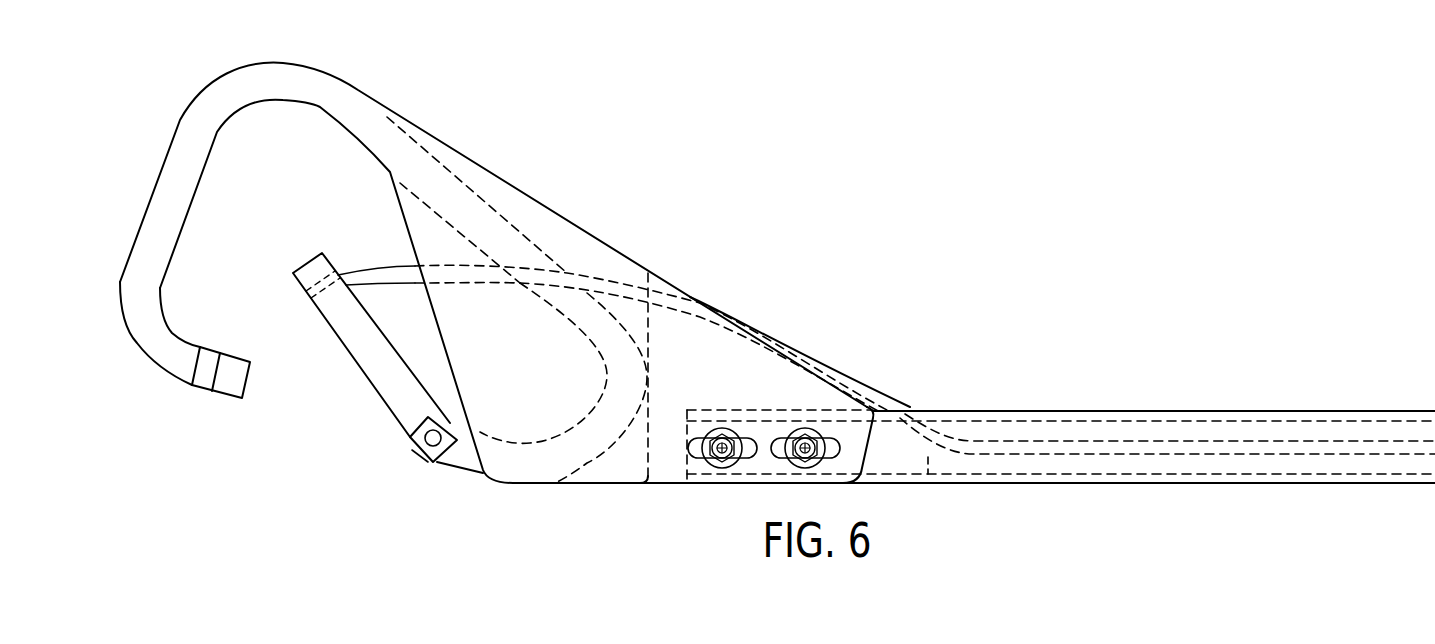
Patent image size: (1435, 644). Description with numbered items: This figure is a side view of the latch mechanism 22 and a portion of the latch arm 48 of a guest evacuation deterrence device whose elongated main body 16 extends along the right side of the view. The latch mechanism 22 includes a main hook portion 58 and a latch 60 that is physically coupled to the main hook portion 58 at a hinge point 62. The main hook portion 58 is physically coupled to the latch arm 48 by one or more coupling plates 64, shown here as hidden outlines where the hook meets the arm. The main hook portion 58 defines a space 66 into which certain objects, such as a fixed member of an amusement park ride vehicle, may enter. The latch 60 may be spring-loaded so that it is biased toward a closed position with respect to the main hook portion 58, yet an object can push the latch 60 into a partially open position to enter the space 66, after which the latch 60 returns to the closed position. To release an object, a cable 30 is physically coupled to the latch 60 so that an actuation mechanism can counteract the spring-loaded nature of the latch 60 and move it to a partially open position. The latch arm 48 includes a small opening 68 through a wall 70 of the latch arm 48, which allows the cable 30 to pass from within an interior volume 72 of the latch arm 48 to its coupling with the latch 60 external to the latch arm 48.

The elongated main body 16 is at (1380, 411).
The latch mechanism 22 is at (414, 94).
The cable 30 is at (813, 350).
The latch arm 48 is at (1150, 485).
The main hook portion 58 is at (128, 328).
The latch 60 is at (362, 373).
The hinge point 62 is at (433, 448).
The coupling plates 64 is at (553, 233).
The space 66 is at (265, 207).
The small opening 68 is at (930, 420).
The wall 70 is at (1023, 411).
The interior volume 72 is at (928, 457).